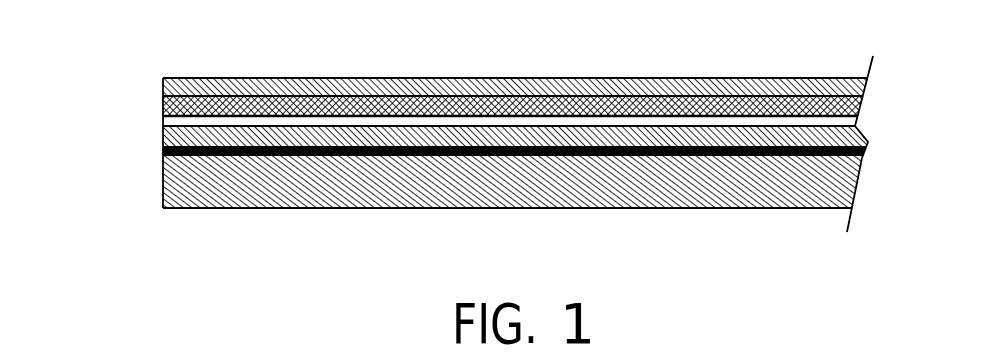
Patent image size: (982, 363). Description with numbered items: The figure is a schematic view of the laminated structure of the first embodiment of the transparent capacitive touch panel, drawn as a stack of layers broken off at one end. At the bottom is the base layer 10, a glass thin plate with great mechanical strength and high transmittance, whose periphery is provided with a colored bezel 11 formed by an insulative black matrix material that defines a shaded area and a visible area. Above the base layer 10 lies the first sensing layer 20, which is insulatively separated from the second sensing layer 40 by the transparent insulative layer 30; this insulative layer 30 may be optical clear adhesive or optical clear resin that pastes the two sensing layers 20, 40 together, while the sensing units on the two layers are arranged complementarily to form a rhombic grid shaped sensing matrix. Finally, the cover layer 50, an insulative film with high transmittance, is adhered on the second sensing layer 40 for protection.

The base layer 10 is at (183, 195).
The colored bezel 11 is at (165, 152).
The first sensing layer 20 is at (163, 140).
The insulative layer 30 is at (165, 121).
The second sensing layer 40 is at (165, 105).
The cover layer 50 is at (162, 87).